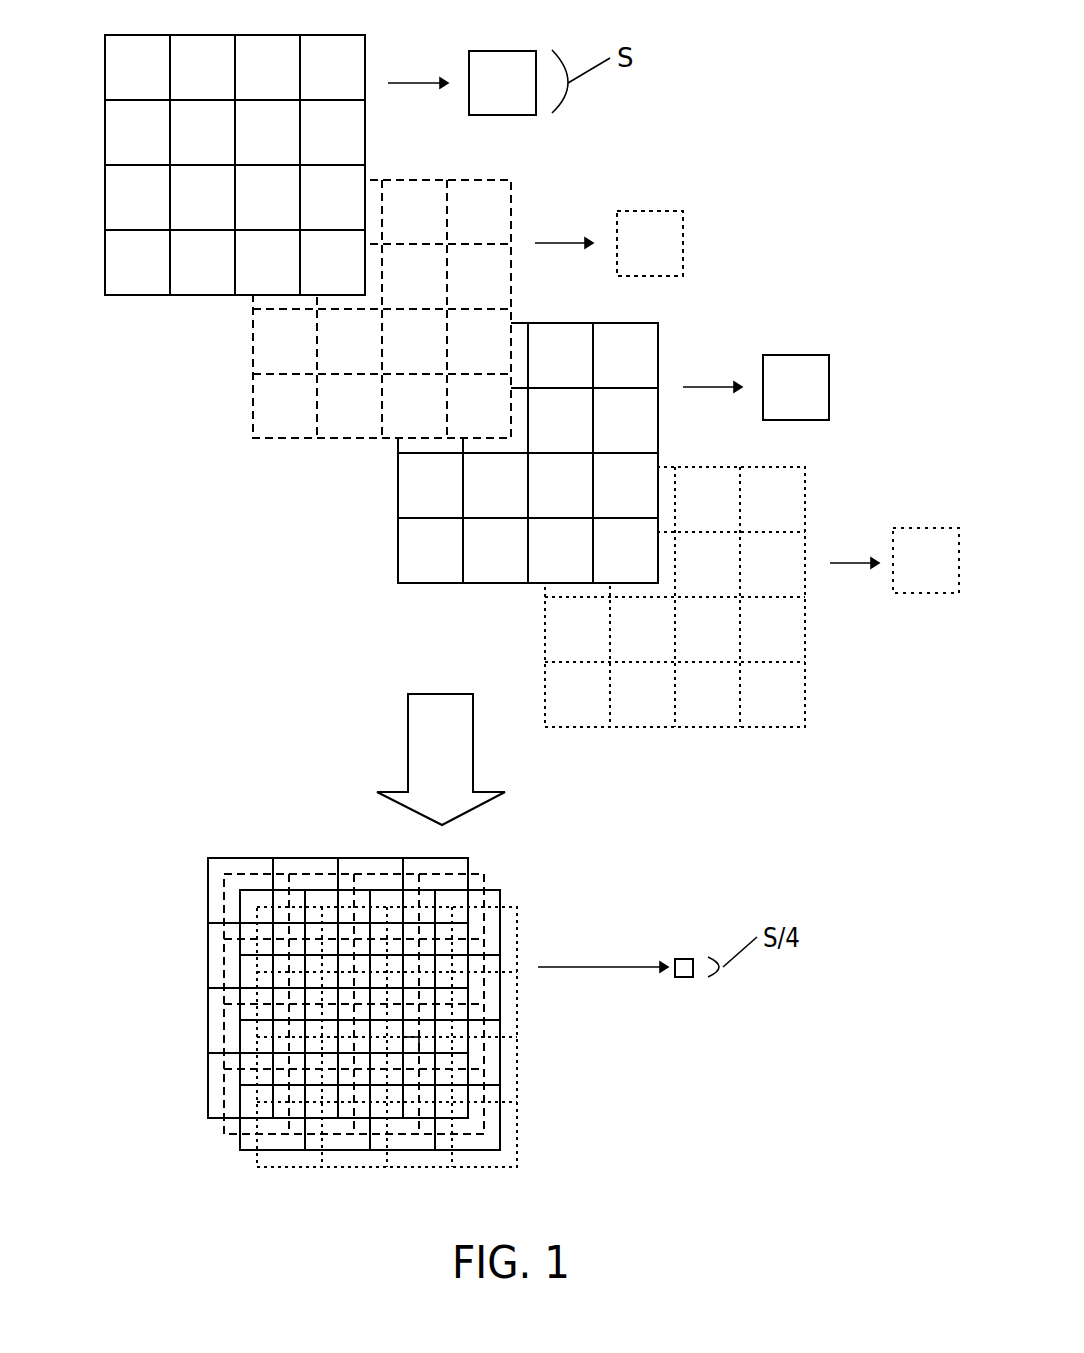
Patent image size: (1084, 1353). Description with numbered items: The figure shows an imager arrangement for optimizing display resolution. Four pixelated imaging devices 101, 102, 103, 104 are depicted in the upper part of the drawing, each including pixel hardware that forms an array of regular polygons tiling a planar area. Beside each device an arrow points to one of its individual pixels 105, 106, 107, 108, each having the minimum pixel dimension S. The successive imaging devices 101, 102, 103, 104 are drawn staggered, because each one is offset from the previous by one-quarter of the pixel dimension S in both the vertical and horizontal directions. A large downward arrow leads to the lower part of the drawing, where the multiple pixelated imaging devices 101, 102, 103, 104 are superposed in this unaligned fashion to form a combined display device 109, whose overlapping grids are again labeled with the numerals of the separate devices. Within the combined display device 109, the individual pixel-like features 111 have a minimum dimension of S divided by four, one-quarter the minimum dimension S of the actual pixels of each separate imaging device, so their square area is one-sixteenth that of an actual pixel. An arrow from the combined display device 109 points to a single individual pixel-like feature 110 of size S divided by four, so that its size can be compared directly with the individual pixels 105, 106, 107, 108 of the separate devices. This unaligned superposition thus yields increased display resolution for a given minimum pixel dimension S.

The pixelated imaging device 101 is at (96, 197).
The pixelated imaging device 102 is at (243, 385).
The pixelated imaging device 103 is at (393, 512).
The pixelated imaging device 104 is at (537, 670).
The individual pixel 105 is at (502, 130).
The individual pixel 106 is at (650, 292).
The individual pixel 107 is at (797, 435).
The individual pixel 108 is at (920, 613).
The combined display device 109 is at (193, 1003).
The individual pixel-like feature 110 is at (683, 983).
The pixel-like features 111 is at (408, 1043).